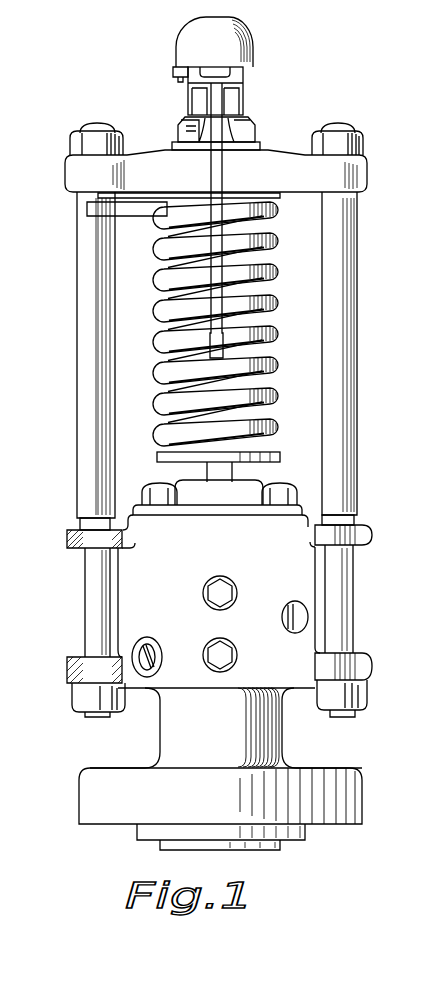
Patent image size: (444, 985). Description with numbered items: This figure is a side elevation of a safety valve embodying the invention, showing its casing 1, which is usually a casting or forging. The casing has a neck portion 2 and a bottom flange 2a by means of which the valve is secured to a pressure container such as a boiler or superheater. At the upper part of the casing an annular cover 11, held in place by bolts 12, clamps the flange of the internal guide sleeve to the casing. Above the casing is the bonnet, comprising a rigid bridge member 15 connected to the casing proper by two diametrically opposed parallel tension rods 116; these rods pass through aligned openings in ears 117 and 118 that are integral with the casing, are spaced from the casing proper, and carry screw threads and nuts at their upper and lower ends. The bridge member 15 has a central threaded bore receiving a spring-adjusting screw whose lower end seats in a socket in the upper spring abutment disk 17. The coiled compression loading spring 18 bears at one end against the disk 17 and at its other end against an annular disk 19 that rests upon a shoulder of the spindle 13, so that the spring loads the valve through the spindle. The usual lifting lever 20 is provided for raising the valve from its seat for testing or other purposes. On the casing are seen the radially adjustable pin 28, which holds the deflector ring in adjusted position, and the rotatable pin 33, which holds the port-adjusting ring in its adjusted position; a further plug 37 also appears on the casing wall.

The casing 1 is at (135, 603).
The neck portion 2 is at (263, 734).
The bottom flange 2a is at (98, 780).
The annular cover 11 is at (194, 511).
The bolts 12 is at (160, 488).
The spindle 13 is at (238, 472).
The bridge member 15 is at (280, 160).
The upper spring abutment disk 17 is at (243, 208).
The loading spring 18 is at (166, 280).
The annular disk 19 is at (157, 458).
The lifting lever 20 is at (211, 172).
The radially adjustable pin 28 is at (222, 590).
The rotatable pin 33 is at (295, 604).
The hex socket plug 37 is at (222, 650).
The tension rods 116 is at (85, 340).
The ears 117 is at (67, 540).
The ears 118 is at (68, 668).